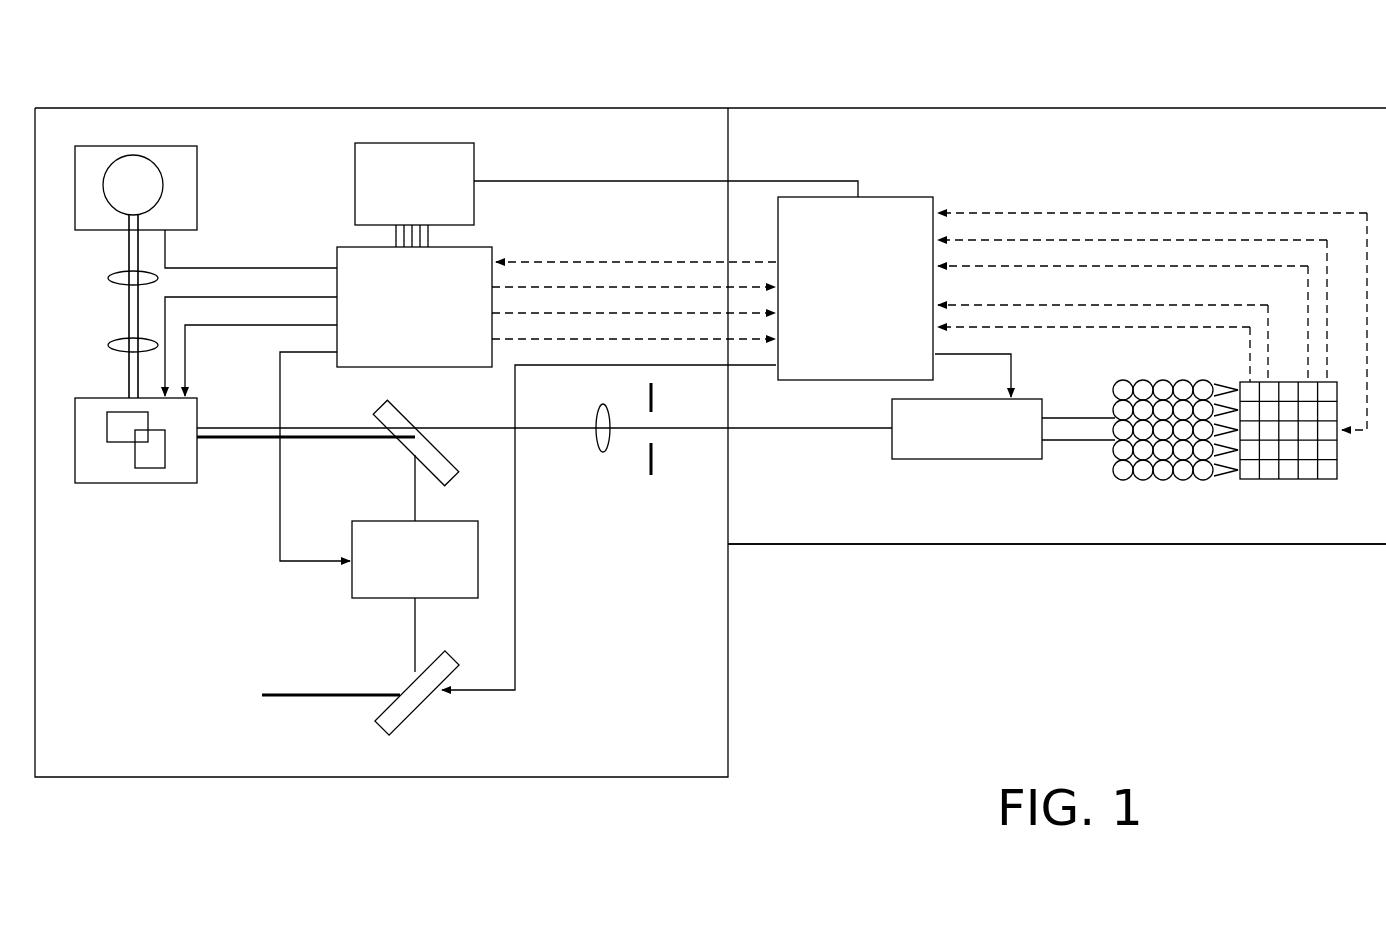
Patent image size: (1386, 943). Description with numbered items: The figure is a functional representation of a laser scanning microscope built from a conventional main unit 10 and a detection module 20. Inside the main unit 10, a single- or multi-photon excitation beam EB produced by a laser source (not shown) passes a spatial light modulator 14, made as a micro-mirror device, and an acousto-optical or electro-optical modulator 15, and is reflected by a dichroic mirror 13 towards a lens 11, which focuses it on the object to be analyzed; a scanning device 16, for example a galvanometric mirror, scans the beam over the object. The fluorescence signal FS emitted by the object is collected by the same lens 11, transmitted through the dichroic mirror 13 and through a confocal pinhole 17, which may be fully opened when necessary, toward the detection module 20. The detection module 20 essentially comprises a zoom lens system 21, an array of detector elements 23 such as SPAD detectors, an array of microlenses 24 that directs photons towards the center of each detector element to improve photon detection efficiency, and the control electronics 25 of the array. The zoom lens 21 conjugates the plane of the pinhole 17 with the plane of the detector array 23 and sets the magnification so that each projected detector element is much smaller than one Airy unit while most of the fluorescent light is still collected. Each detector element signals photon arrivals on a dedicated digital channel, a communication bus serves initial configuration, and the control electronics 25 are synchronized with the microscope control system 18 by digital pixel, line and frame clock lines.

The main unit 10 is at (348, 782).
The lens 11 is at (180, 146).
The dichroic mirror 13 is at (450, 458).
The spatial light modulator 14 is at (412, 720).
The acousto-optical or electro-optical modulator 15 is at (480, 575).
The scanning device 16 is at (97, 485).
The confocal pinhole 17 is at (655, 463).
The microscope control system 18 is at (511, 416).
The detection module 20 is at (1220, 550).
The zoom lens system 21 is at (943, 460).
The array of detector elements 23 is at (1310, 480).
The array of microlenses 24 is at (1163, 480).
The control electronics 25 is at (897, 197).
The fluorescence signal FS is at (126, 313).
The excitation beam EB is at (231, 445).